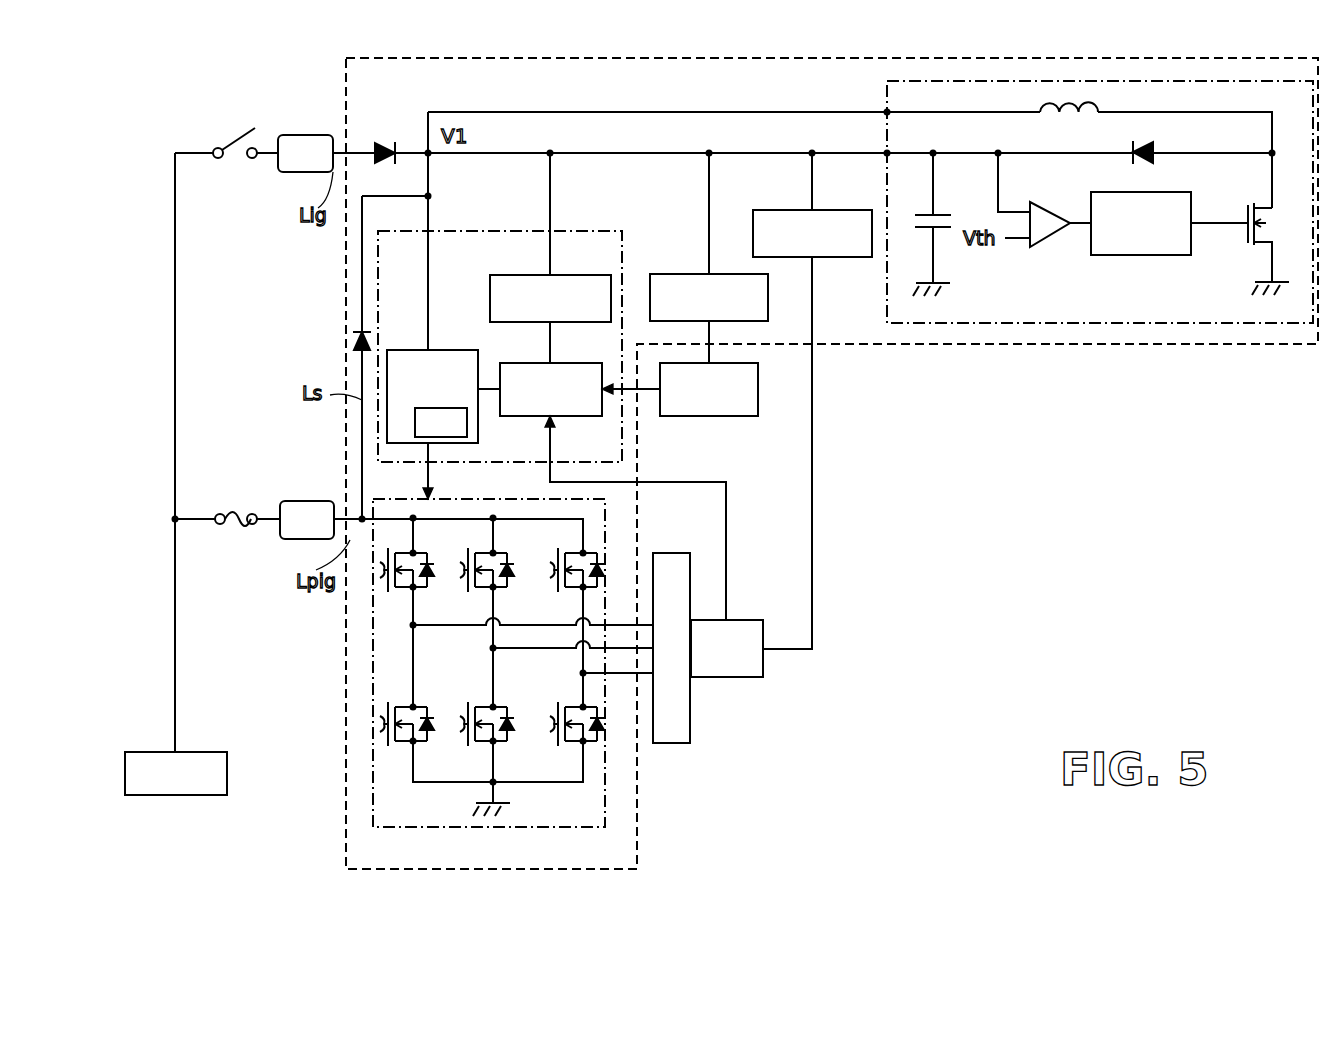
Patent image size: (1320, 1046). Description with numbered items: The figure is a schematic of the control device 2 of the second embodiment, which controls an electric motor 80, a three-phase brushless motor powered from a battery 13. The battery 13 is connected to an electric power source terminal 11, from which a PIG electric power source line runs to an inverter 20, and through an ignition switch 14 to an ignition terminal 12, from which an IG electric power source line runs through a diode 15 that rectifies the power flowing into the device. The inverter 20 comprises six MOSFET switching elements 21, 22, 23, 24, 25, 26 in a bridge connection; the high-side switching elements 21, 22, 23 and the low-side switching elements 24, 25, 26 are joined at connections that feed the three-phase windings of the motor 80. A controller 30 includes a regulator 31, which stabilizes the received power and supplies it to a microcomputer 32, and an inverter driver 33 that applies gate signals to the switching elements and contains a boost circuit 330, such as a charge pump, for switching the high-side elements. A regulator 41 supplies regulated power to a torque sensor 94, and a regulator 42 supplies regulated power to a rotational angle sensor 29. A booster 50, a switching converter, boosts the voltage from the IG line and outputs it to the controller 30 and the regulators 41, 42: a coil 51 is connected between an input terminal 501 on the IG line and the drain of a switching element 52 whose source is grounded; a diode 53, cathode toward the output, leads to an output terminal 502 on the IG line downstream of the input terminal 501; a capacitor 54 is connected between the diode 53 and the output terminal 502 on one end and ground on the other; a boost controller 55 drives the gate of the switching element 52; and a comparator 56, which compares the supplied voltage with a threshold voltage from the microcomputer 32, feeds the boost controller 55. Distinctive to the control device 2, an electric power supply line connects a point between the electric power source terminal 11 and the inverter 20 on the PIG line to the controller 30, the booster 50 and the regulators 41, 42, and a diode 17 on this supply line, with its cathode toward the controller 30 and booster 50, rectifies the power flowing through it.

The control device 2 is at (1178, 344).
The electric power source terminal 11 is at (310, 501).
The ignition terminal 12 is at (303, 135).
The battery 13 is at (205, 795).
The ignition switch 14 is at (232, 136).
The diode 15 is at (385, 142).
The diode 17 is at (353, 338).
The inverter 20 is at (538, 827).
The switching element 21 is at (420, 590).
The switching element 22 is at (488, 553).
The switching element 23 is at (568, 553).
The switching element 24 is at (420, 707).
The switching element 25 is at (500, 707).
The switching element 26 is at (570, 742).
The rotational angle sensor 29 is at (745, 620).
The controller 30 is at (598, 231).
The regulator 31 is at (528, 275).
The microcomputer 32 is at (566, 416).
The inverter driver 33 is at (404, 350).
The boost circuit 330 is at (467, 422).
The regulator 41 is at (677, 274).
The regulator 42 is at (830, 257).
The booster 50 is at (1035, 323).
The coil 51 is at (1062, 116).
The switching element 52 is at (1245, 218).
The diode 53 is at (1147, 142).
The capacitor 54 is at (940, 214).
The boost controller 55 is at (1150, 255).
The comparator 56 is at (1046, 247).
The electric motor 80 is at (670, 743).
The torque sensor 94 is at (742, 416).
The input terminal 501 is at (885, 108).
The output terminal 502 is at (884, 160).